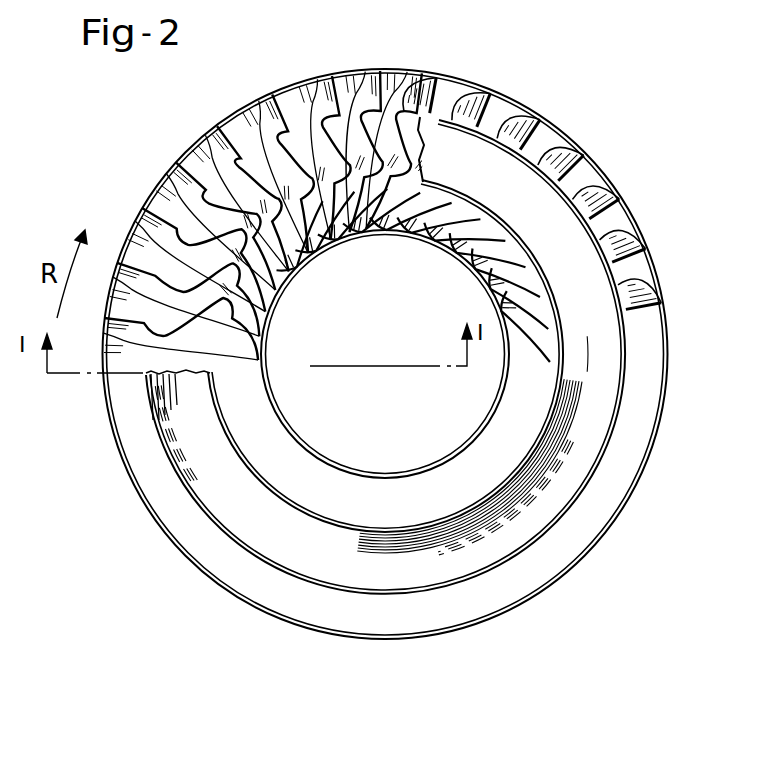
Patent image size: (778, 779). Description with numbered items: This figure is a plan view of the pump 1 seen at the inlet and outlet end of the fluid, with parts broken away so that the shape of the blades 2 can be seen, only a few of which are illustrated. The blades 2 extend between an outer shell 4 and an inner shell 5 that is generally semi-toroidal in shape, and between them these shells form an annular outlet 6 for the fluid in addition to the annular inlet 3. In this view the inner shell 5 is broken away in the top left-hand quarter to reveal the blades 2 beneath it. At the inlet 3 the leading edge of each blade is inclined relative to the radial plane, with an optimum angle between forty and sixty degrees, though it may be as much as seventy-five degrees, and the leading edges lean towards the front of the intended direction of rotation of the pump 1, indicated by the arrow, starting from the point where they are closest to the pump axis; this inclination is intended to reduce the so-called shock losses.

The pump 1 is at (152, 182).
The blades 2 is at (237, 225).
The inlet end 3 is at (473, 220).
The outer shell 4 is at (396, 87).
The inner shell 5 is at (547, 207).
The annular outlet 6 is at (620, 233).